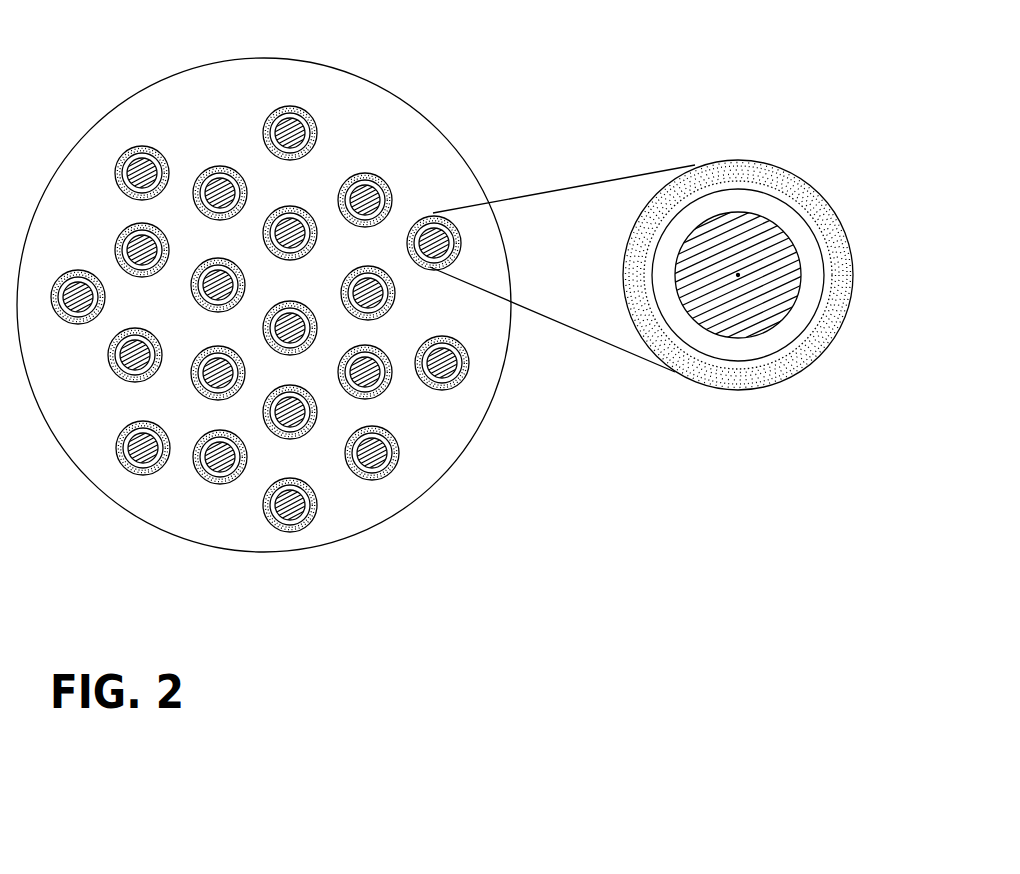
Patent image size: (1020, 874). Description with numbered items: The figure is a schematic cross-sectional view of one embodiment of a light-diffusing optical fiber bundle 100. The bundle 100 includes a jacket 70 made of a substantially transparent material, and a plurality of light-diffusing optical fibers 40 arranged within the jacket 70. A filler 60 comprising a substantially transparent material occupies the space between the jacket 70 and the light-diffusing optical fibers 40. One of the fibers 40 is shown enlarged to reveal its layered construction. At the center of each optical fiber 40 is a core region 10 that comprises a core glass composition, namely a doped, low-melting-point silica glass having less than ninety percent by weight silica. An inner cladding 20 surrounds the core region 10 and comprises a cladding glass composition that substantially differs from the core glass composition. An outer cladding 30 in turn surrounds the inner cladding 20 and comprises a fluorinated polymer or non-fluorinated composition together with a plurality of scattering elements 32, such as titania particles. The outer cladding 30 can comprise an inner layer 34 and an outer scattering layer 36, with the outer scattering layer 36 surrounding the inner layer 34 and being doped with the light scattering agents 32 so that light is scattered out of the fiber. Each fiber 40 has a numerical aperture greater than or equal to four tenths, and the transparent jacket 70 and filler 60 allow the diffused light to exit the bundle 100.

The light-diffusing optical fiber bundle 100 is at (572, 75).
The jacket 70 is at (428, 118).
The filler 60 is at (448, 188).
The light-diffusing optical fiber 40 is at (358, 162).
The outer cladding 30 is at (905, 372).
The scattering elements 32 is at (752, 382).
The inner layer 34 is at (812, 342).
The outer scattering layer 36 is at (797, 372).
The inner cladding 20 is at (783, 215).
The core region 10 is at (790, 253).